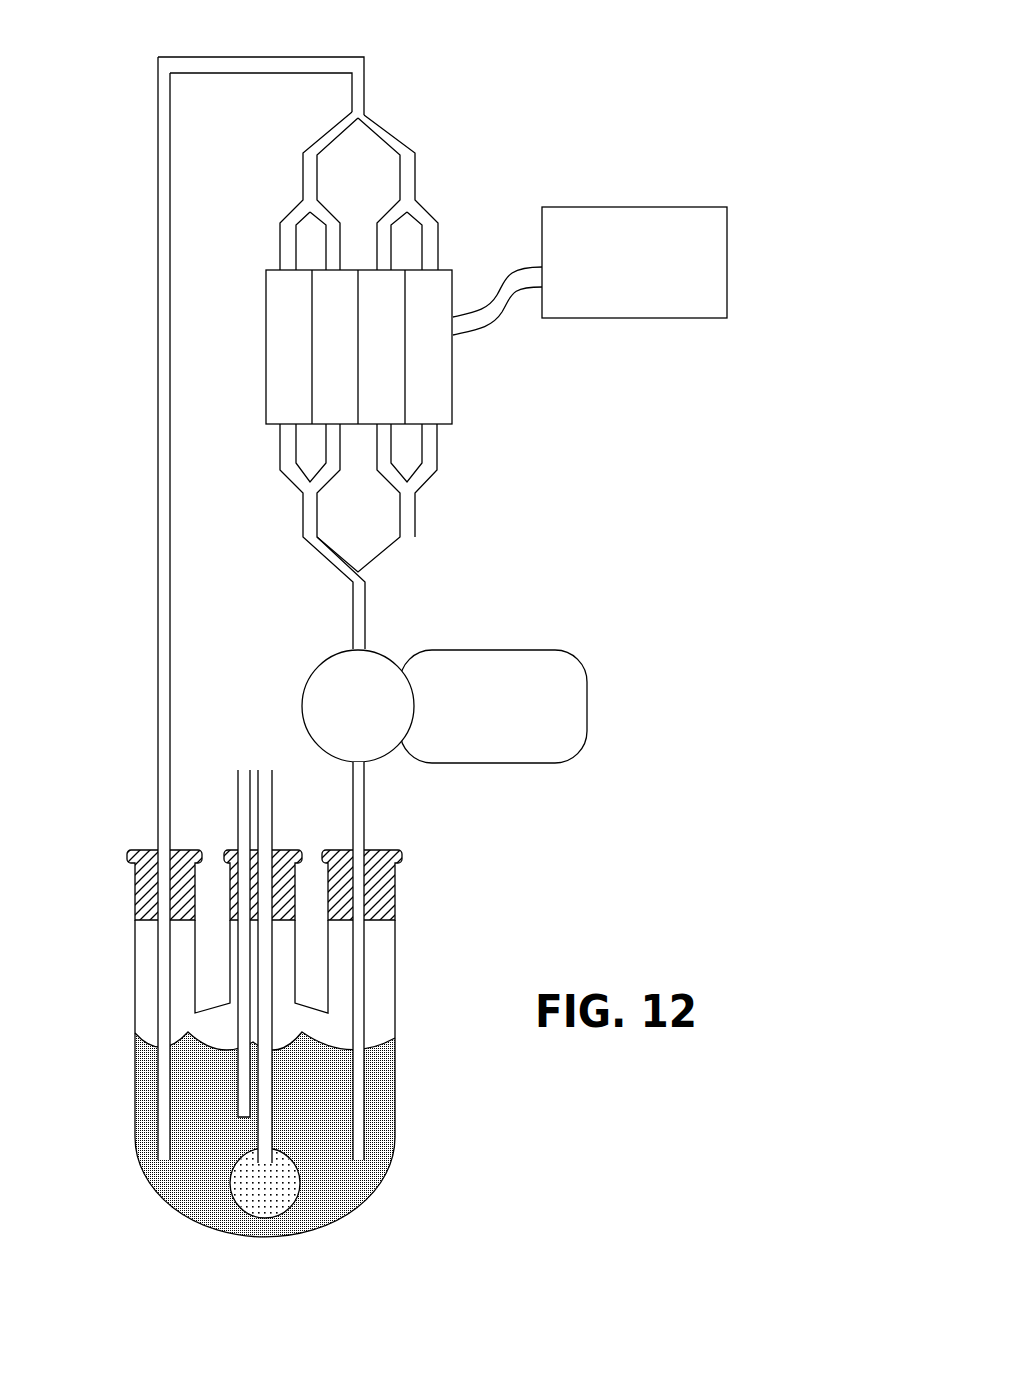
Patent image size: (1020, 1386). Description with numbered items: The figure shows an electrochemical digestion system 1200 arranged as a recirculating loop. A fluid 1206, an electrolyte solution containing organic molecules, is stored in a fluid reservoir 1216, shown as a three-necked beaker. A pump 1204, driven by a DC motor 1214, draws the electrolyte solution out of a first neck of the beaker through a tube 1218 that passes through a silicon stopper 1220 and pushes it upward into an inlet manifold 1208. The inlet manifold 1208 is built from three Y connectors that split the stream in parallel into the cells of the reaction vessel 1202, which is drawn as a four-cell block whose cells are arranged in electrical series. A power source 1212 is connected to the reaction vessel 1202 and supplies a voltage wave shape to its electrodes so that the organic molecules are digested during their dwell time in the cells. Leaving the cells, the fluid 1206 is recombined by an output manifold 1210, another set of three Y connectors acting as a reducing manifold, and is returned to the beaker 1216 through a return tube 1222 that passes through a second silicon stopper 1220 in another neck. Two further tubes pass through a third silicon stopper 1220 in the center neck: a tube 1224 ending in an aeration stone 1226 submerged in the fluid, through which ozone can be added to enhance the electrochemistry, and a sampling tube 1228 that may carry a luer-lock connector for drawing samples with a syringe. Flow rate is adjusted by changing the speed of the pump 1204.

The electrochemical digestion system 1200 is at (404, 45).
The reaction vessel 1202 is at (482, 365).
The pump 1204 is at (331, 718).
The fluid 1206 is at (338, 1115).
The inlet manifold 1208 is at (462, 495).
The output manifold 1210 is at (462, 197).
The power source 1212 is at (608, 275).
The DC motor 1214 is at (465, 718).
The fluid reservoir 1216 is at (396, 974).
The tube 1218 is at (366, 818).
The silicon stopper 1220 is at (135, 887).
The tube 1222 is at (165, 817).
The tube 1224 is at (267, 790).
The aeration stone 1226 is at (287, 1194).
The sampling tube 1228 is at (245, 827).